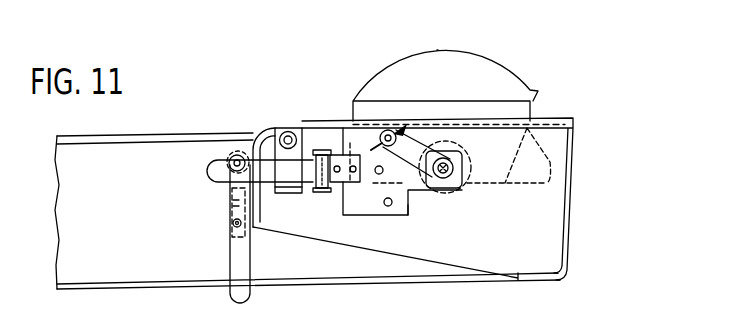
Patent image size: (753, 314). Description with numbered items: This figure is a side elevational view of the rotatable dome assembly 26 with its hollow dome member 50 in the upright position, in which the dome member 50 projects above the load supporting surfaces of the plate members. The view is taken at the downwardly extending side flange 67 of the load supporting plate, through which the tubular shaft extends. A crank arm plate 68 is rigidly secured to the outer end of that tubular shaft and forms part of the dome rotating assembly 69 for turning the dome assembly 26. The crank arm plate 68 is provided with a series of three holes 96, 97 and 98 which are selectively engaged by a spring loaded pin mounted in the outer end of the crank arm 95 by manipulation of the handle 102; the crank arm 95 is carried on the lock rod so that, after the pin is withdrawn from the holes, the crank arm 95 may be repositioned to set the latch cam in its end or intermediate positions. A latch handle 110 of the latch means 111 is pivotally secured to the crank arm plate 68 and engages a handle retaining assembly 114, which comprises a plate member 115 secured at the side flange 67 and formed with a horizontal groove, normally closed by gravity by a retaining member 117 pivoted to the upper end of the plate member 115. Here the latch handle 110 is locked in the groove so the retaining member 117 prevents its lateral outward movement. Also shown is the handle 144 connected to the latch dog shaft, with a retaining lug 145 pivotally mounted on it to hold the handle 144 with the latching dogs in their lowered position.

The rotatable dome assembly 26 is at (499, 53).
The hollow dome member 50 is at (498, 80).
The side flange 67 is at (557, 202).
The crank arm plate 68 is at (410, 202).
The dome rotating assembly 69 is at (410, 221).
The crank arm 95 is at (412, 147).
The hole 96 is at (385, 130).
The hole 97 is at (378, 175).
The hole 98 is at (388, 207).
The handle 102 is at (393, 126).
The latch handle 110 is at (210, 172).
The latch means 111 is at (256, 129).
The handle retaining assembly 114 is at (284, 121).
The plate member 115 is at (300, 127).
The retaining member 117 is at (292, 195).
The handle 144 is at (238, 253).
The retaining lug 145 is at (232, 203).